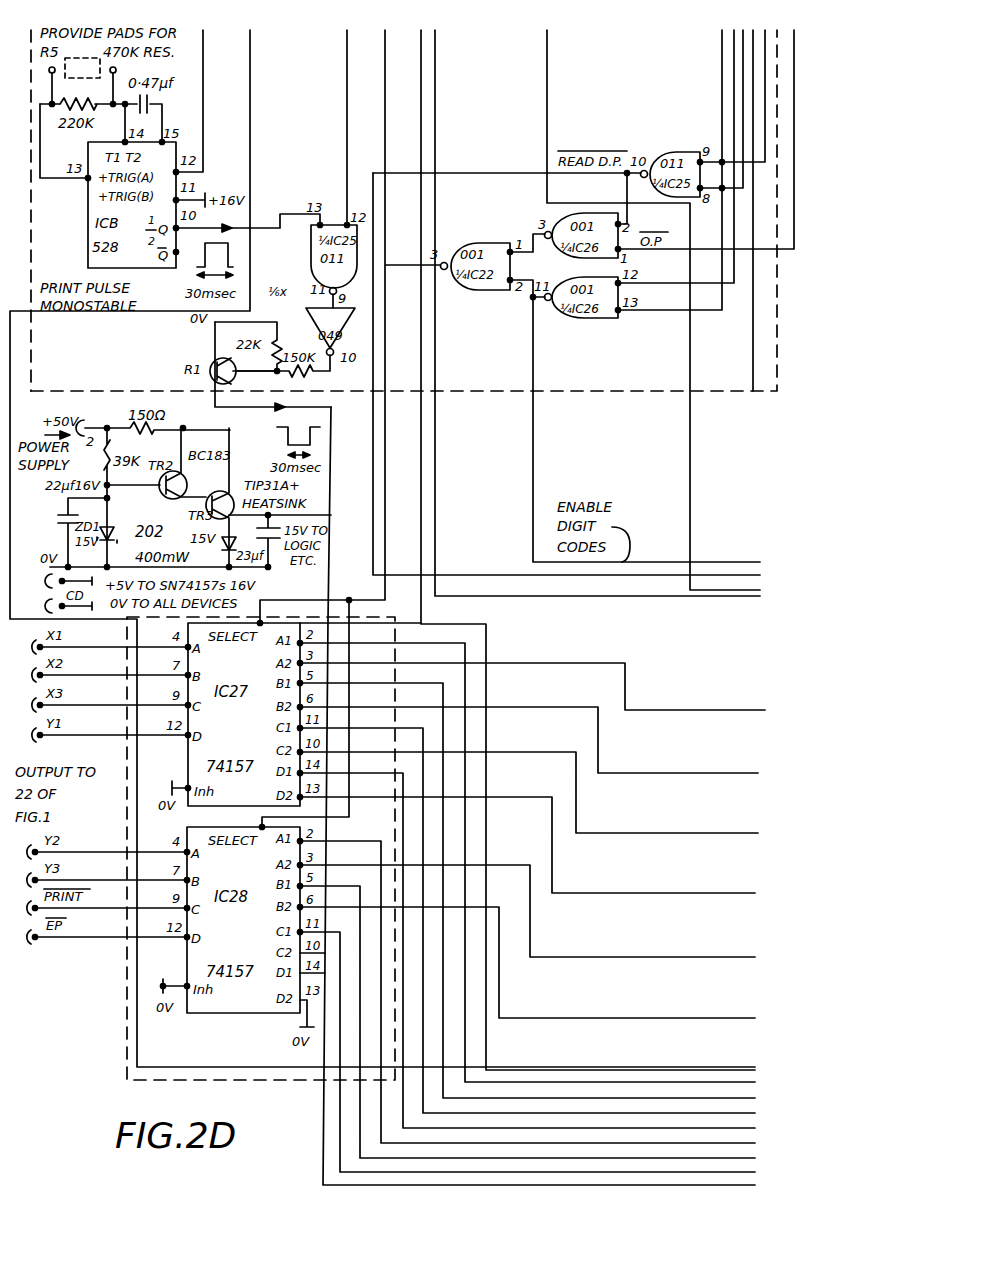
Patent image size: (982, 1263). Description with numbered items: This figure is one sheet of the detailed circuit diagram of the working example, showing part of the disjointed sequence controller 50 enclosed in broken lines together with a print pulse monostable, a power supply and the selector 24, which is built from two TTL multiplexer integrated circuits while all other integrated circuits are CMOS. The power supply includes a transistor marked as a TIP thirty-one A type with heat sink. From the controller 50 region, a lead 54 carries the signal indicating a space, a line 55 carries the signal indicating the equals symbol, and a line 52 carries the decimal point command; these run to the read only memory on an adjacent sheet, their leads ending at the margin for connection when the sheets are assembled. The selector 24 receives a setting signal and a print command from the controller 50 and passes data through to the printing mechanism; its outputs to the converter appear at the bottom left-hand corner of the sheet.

The selector 24 is at (127, 998).
The sequence controller 50 is at (595, 392).
The decimal point command line 52 is at (372, 452).
The lead 54 is at (435, 483).
The line 55 is at (690, 484).